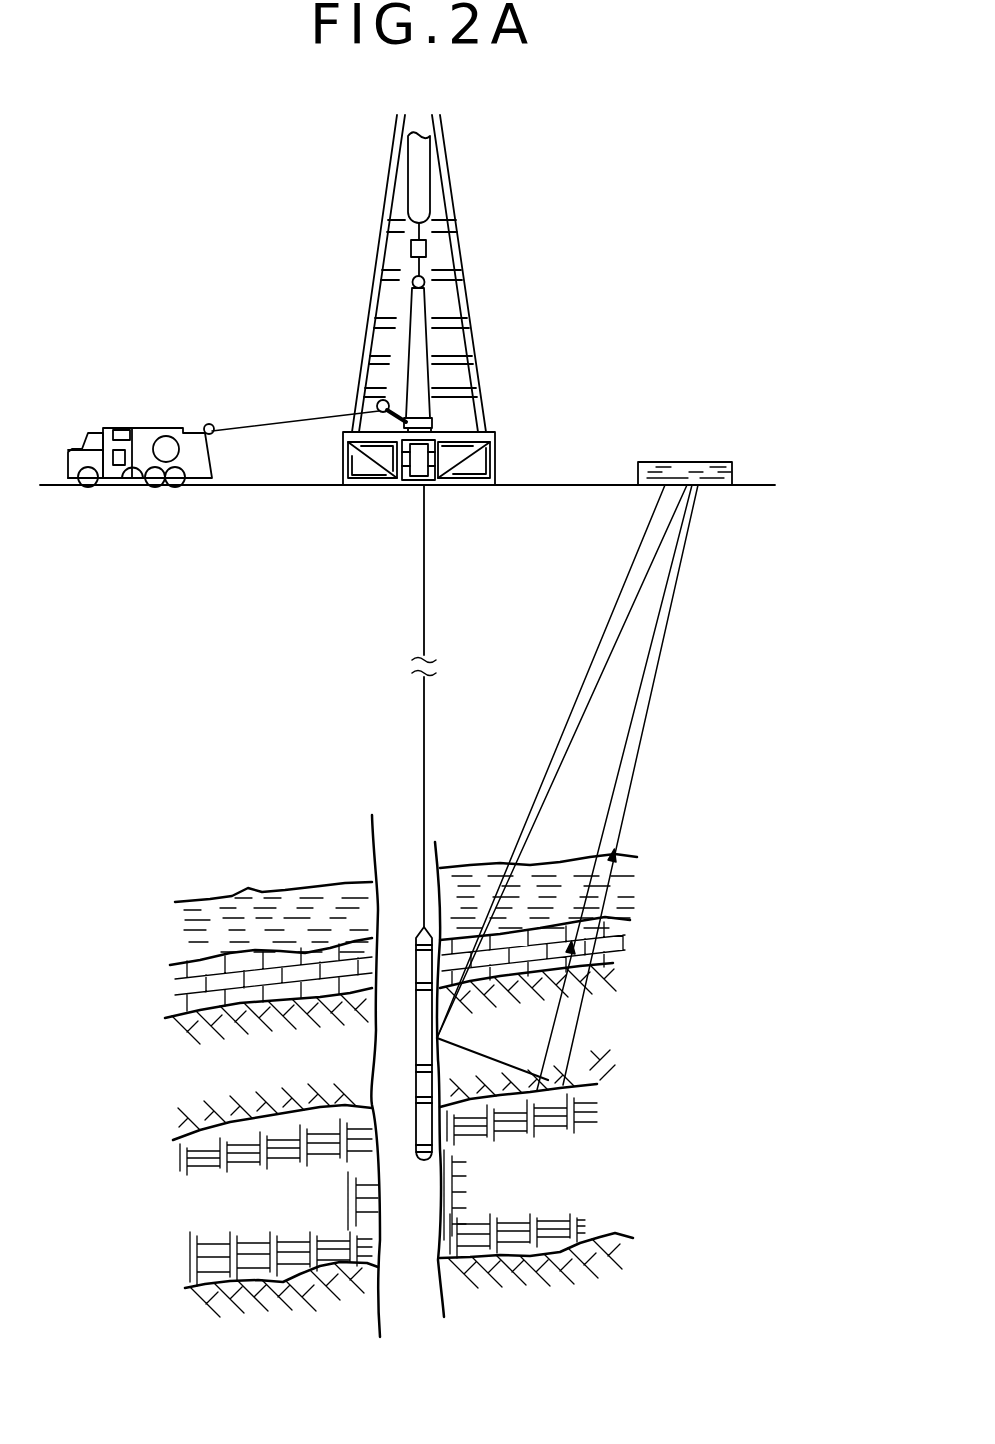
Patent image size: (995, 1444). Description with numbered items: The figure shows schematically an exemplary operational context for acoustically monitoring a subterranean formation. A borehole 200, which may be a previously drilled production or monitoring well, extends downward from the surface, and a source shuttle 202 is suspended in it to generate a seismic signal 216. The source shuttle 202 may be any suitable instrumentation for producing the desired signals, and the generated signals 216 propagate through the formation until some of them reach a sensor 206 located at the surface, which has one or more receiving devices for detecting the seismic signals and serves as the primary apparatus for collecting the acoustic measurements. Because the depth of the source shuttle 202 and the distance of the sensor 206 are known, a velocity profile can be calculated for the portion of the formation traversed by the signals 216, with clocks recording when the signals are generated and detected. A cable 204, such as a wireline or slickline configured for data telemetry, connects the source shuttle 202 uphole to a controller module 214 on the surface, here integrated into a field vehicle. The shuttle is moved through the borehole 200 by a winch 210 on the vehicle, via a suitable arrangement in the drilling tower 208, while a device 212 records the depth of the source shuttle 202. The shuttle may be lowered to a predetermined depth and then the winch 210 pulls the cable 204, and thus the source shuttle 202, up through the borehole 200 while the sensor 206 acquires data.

The borehole 200 is at (392, 1202).
The source shuttle 202 is at (416, 1055).
The cable 204 is at (424, 592).
The sensor 206 is at (692, 462).
The drilling tower 208 is at (478, 341).
The winch 210 is at (210, 424).
The device 212 is at (163, 447).
The controller module 214 is at (120, 481).
The seismic signal 216 is at (628, 725).